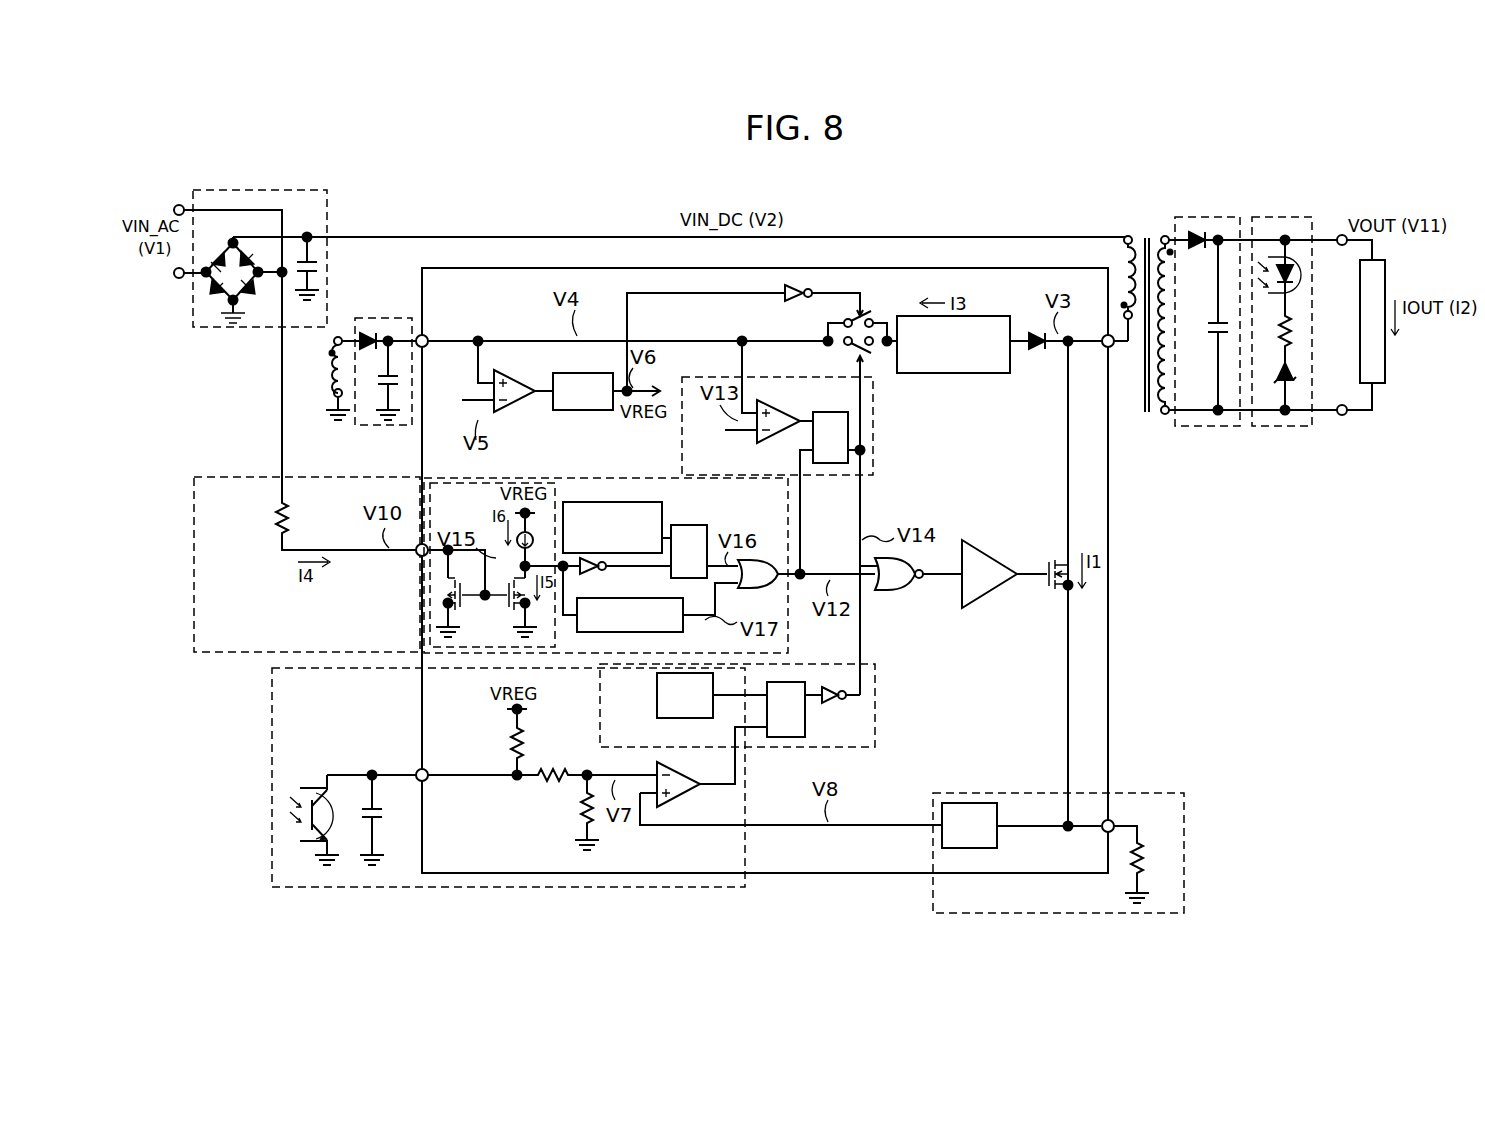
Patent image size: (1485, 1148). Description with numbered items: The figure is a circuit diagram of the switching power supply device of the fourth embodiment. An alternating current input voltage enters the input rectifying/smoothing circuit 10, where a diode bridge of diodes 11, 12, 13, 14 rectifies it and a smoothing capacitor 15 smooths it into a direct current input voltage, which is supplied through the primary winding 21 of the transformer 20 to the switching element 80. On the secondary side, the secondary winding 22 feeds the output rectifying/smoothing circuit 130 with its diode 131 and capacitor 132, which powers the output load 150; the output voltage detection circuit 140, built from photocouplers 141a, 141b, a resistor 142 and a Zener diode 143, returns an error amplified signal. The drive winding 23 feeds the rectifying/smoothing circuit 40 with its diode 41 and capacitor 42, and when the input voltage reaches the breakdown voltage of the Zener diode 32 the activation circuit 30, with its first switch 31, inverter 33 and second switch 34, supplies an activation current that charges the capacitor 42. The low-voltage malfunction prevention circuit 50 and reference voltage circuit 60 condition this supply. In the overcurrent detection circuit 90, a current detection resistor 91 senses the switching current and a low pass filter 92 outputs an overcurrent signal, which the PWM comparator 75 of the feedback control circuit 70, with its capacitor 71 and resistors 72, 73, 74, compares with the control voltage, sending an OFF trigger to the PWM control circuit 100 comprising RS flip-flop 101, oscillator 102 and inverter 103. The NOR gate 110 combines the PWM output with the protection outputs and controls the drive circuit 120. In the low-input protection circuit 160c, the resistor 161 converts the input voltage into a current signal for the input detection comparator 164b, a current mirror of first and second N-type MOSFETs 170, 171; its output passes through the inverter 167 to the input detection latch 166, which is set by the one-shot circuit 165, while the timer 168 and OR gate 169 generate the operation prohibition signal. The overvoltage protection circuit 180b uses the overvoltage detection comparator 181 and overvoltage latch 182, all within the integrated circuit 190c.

The input rectifying/smoothing circuit 10 is at (290, 182).
The diode 11 is at (215, 252).
The diode 12 is at (247, 257).
The diode 13 is at (215, 292).
The diode 14 is at (250, 290).
The smoothing capacitor 15 is at (315, 250).
The transformer 20 is at (1138, 301).
The primary winding 21 is at (1122, 238).
The secondary winding 22 is at (1168, 236).
The drive winding 23 is at (338, 330).
The activation circuit 30 is at (980, 373).
The first switch 31 is at (875, 350).
The Zener diode 32 is at (1038, 352).
The inverter 33 is at (780, 300).
The second switch 34 is at (872, 320).
The rectifying/smoothing circuit 40 is at (400, 316).
The diode 41 is at (372, 328).
The capacitor 42 is at (380, 400).
The low-voltage malfunction prevention circuit 50 is at (515, 400).
The reference voltage circuit 60 is at (582, 410).
The feedback control circuit 70 is at (272, 762).
The capacitor 71 is at (382, 820).
The resistor 72 is at (510, 740).
The resistor 73 is at (545, 782).
The resistor 74 is at (580, 820).
The PWM comparator 75 is at (680, 800).
The switching element 80 is at (1052, 560).
The overcurrent detection circuit 90 is at (1184, 850).
The current detection resistor 91 is at (1150, 826).
The low pass filter 92 is at (997, 835).
The PWM control circuit 100 is at (875, 705).
The RS flip-flop 101 is at (805, 724).
The oscillator 102 is at (657, 700).
The inverter 103 is at (830, 685).
The NOR gate 110 is at (898, 590).
The drive circuit 120 is at (995, 600).
The output rectifying/smoothing circuit 130 is at (1212, 426).
The diode 131 is at (1203, 230).
The capacitor 132 is at (1208, 335).
The output voltage detection circuit 140 is at (1275, 426).
The photocoupler 141a is at (1292, 260).
The photocoupler 141b is at (310, 785).
The resistor 142 is at (1293, 335).
The Zener diode 143 is at (1293, 385).
The output load 150 is at (1385, 365).
The low-input protection circuit 160c is at (224, 652).
The resistor 161 is at (270, 518).
The input detection comparator 164b is at (430, 640).
The one-shot circuit 165 is at (622, 502).
The input detection latch 166 is at (692, 525).
The inverter 167 is at (598, 572).
The timer 168 is at (592, 632).
The OR gate 169 is at (768, 560).
The first N-type MOSFET 170 is at (455, 592).
The second N-type MOSFET 171 is at (505, 612).
The overvoltage protection circuit 180b is at (873, 445).
The overvoltage detection comparator 181 is at (785, 410).
The overvoltage latch 182 is at (830, 463).
The integrated circuit 190c is at (1108, 642).